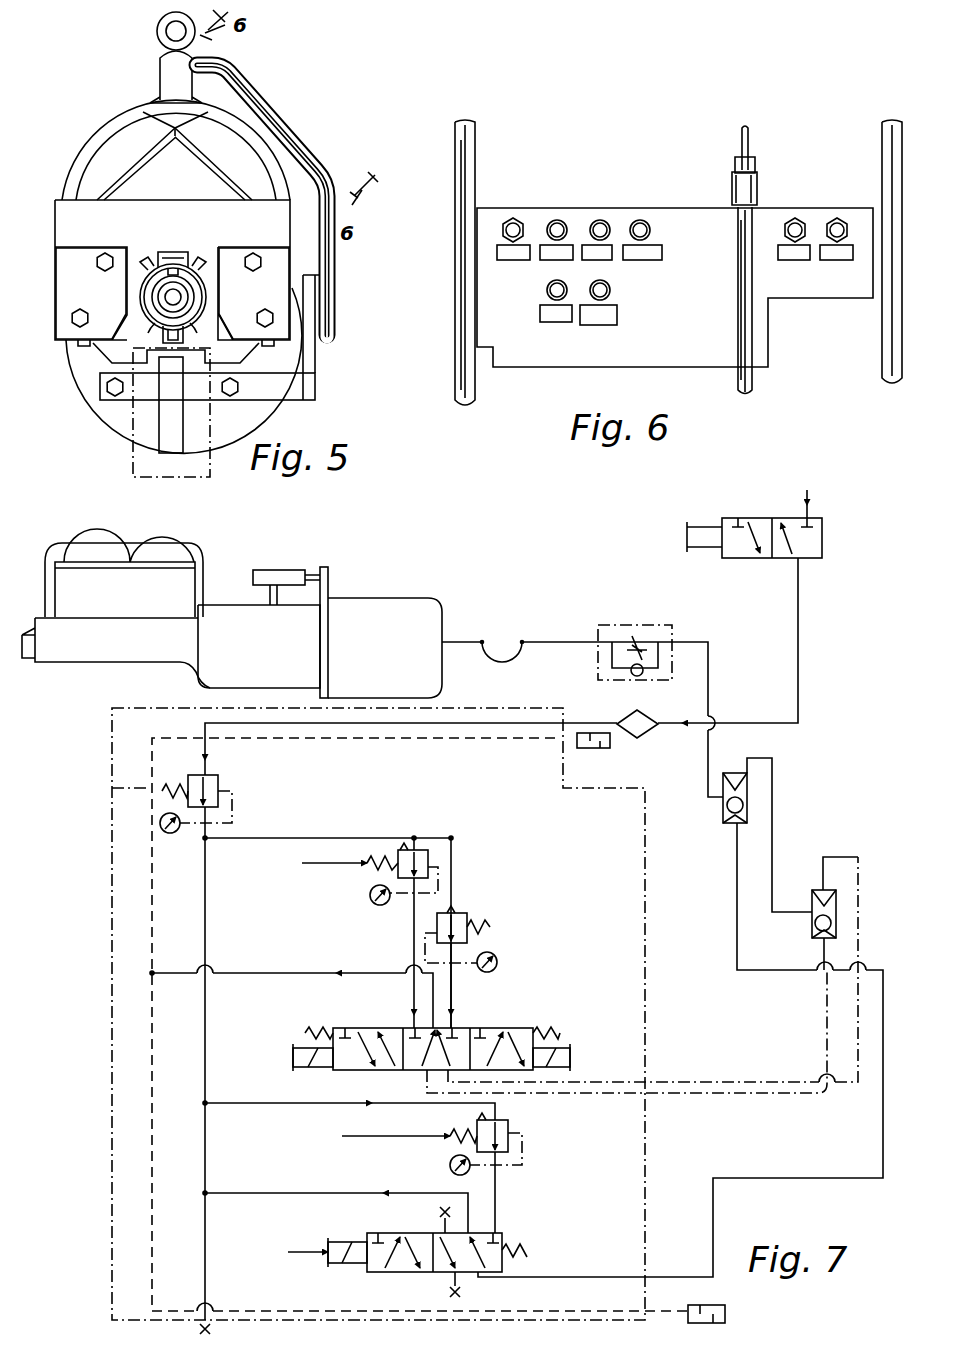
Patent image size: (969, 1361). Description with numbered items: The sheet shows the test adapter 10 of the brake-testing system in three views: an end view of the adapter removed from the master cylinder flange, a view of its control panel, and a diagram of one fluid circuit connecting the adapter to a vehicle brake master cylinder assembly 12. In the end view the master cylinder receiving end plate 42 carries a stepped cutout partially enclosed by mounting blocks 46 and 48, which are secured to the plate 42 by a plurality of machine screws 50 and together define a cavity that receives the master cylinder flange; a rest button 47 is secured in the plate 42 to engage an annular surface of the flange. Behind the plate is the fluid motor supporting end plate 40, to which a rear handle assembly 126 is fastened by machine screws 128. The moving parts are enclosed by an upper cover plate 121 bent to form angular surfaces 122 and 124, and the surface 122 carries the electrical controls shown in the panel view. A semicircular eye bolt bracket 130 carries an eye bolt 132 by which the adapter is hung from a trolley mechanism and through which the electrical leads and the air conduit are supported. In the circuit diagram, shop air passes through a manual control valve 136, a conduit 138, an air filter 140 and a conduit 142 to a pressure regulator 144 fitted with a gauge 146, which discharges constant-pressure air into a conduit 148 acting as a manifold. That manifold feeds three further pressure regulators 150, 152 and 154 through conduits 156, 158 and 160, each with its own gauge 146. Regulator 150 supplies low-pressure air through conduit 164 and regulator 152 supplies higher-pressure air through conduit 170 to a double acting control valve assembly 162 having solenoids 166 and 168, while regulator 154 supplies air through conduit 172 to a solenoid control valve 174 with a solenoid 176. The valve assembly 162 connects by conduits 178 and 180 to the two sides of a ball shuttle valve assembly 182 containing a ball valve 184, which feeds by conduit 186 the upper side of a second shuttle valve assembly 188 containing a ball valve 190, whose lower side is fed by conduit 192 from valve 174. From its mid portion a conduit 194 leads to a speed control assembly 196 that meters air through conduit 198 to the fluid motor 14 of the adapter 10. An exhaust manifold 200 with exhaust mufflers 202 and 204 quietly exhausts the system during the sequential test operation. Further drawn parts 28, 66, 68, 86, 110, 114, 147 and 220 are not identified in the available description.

In FIG. 7, the test adapter 10 is at (230, 618).
In FIG. 7, the vehicle brake master cylinder assembly 12 is at (83, 648).
In FIG. 7, the fluid motor 14 is at (408, 612).
In FIG. 5, the drive shaft 28 is at (175, 297).
In FIG. 5, the fluid motor supporting end plate 40 is at (80, 380).
In FIG. 5, the master cylinder receiving end plate 42 is at (163, 212).
In FIG. 5, the mounting block 46 is at (74, 252).
In FIG. 5, the rest button 47 is at (158, 268).
In FIG. 5, the mounting block 48 is at (233, 252).
In FIG. 5, the machine screws 50 is at (80, 310).
In FIG. 5, the left pad 66 is at (152, 318).
In FIG. 5, the right pad 68 is at (190, 316).
In FIG. 7, the limit switch 86 is at (273, 578).
In FIG. 5, the stem 110 is at (166, 440).
In FIG. 5, the housing 114 is at (205, 440).
In FIG. 5, the upper cover plate 121 is at (157, 110).
In FIG. 5, the angular surface 122 is at (238, 178).
In FIG. 6, the angular surface 122 is at (684, 218).
In FIG. 5, the angular surface 124 is at (130, 163).
In FIG. 5, the rear handle assembly 126 is at (288, 125).
In FIG. 6, the rear handle assembly 126 is at (468, 148).
In FIG. 5, the machine screws 128 is at (113, 398).
In FIG. 5, the eye bolt bracket 130 is at (118, 124).
In FIG. 6, the eye bolt bracket 130 is at (742, 248).
In FIG. 5, the eye bolt 132 is at (156, 30).
In FIG. 6, the eye bolt 132 is at (749, 152).
In FIG. 7, the manual control valve 136 is at (812, 560).
In FIG. 7, the conduit 138 is at (800, 650).
In FIG. 7, the air filter 140 is at (640, 720).
In FIG. 7, the conduit 142 is at (498, 723).
In FIG. 7, the pressure regulator 144 is at (220, 777).
In FIG. 7, the gauge 146 is at (170, 833).
In FIG. 7, the pressure gauge 147 is at (450, 1165).
In FIG. 7, the conduit 148 is at (207, 940).
In FIG. 7, the pressure regulator 150 is at (398, 875).
In FIG. 7, the pressure regulator 152 is at (470, 918).
In FIG. 7, the pressure regulator 154 is at (504, 1132).
In FIG. 7, the conduit 156 is at (326, 838).
In FIG. 7, the conduit 158 is at (453, 888).
In FIG. 7, the conduit 160 is at (275, 1102).
In FIG. 7, the double acting control valve assembly 162 is at (500, 1020).
In FIG. 7, the conduit 164 is at (413, 923).
In FIG. 7, the solenoid 166 is at (300, 1047).
In FIG. 7, the solenoid 168 is at (566, 1045).
In FIG. 7, the conduit 170 is at (454, 990).
In FIG. 7, the conduit 172 is at (497, 1197).
In FIG. 7, the solenoid control valve 174 is at (415, 1230).
In FIG. 7, the solenoid 176 is at (333, 1240).
In FIG. 7, the conduit 178 is at (590, 1080).
In FIG. 7, the conduit 180 is at (675, 1094).
In FIG. 7, the ball shuttle valve assembly 182 is at (808, 938).
In FIG. 7, the ball valve 184 is at (815, 923).
In FIG. 7, the conduit 186 is at (774, 838).
In FIG. 7, the second shuttle valve assembly 188 is at (720, 820).
In FIG. 7, the ball valve 190 is at (725, 804).
In FIG. 7, the conduit 192 is at (735, 895).
In FIG. 7, the conduit 194 is at (709, 695).
In FIG. 7, the speed control assembly 196 is at (620, 625).
In FIG. 7, the conduit 198 is at (555, 642).
In FIG. 7, the exhaust manifold 200 is at (433, 738).
In FIG. 7, the exhaust muffler 202 is at (610, 747).
In FIG. 7, the exhaust muffler 204 is at (726, 1312).
In FIG. 7, the enclosure 220 is at (100, 1062).